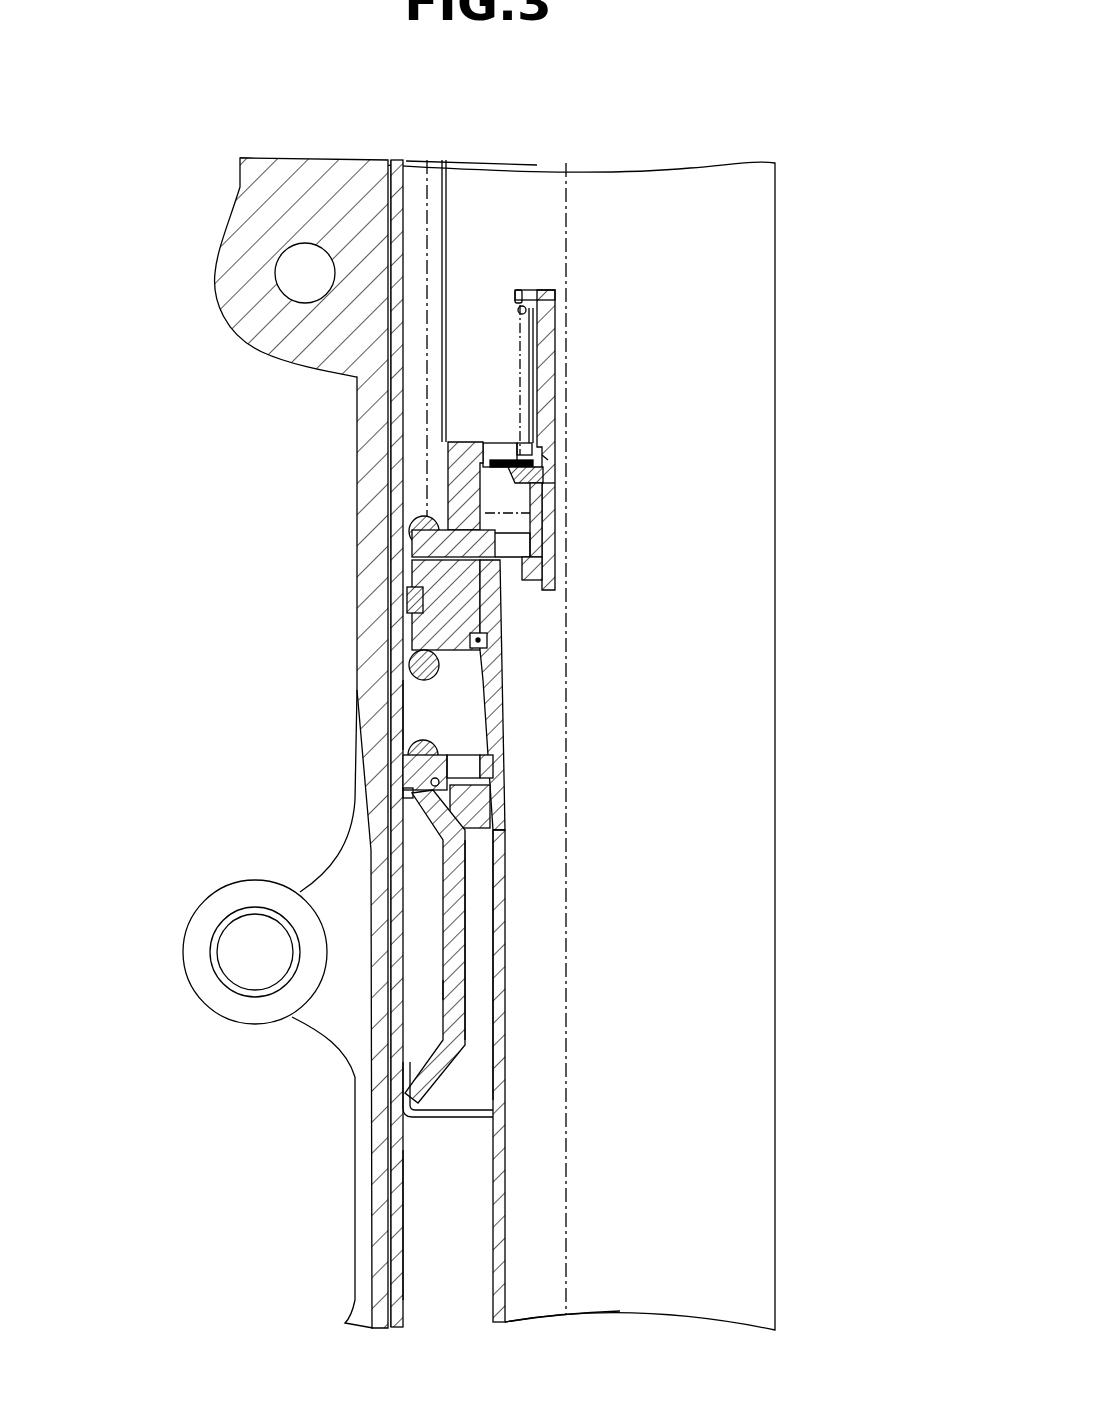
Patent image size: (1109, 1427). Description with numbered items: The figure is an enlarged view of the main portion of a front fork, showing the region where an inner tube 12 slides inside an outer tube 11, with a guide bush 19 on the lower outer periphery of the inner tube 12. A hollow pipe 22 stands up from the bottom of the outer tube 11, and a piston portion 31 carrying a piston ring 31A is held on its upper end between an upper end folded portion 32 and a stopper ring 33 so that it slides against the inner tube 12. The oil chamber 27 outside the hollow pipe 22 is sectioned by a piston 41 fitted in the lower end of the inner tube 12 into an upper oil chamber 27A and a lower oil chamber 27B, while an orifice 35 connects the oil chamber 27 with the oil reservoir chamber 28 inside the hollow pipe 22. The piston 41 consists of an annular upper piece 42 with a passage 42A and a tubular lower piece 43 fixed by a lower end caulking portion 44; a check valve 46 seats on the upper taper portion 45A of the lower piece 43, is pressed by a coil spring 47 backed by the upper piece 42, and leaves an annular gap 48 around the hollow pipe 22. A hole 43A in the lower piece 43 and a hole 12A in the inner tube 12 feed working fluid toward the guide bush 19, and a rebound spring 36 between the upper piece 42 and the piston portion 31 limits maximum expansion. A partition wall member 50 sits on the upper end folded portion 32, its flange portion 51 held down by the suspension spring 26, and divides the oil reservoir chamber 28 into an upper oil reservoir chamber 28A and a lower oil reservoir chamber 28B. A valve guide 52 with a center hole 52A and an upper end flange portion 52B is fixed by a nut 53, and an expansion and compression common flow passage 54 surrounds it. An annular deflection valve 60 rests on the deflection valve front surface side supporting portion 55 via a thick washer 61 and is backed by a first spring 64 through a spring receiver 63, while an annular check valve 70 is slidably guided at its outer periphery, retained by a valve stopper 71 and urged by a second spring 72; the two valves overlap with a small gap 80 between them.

The outer tube 11 is at (360, 397).
The inner tube 12 is at (396, 160).
The hole 12A is at (290, 862).
The guide bush 19 is at (355, 1055).
The hollow pipe 22 is at (493, 1303).
The suspension spring 26 is at (424, 518).
The oil chamber 27 is at (412, 1195).
The upper oil chamber 27A is at (460, 705).
The lower oil chamber 27B is at (418, 1247).
The oil reservoir chamber 28 is at (540, 1075).
The upper oil reservoir chamber 28A is at (513, 192).
The lower oil reservoir chamber 28B is at (525, 1140).
The piston portion 31 is at (440, 582).
The piston ring 31A is at (407, 600).
The upper end folded portion 32 is at (500, 607).
The stopper ring 33 is at (487, 648).
The orifice 35 is at (505, 933).
The rebound spring 36 is at (424, 660).
The piston 41 is at (440, 990).
The upper piece 42 is at (410, 765).
The passage 42A is at (470, 750).
The lower piece 43 is at (405, 1063).
The hole 43A is at (462, 900).
The lower end caulking portion 44 is at (410, 1115).
The upper taper portion 45A is at (430, 800).
The check valve 46 is at (485, 805).
The coil spring 47 is at (405, 790).
The annular gap 48 is at (497, 850).
The partition wall member 50 is at (462, 490).
The flange portion 51 is at (412, 544).
The valve guide 52 is at (528, 300).
The center hole 52A is at (557, 338).
The upper end flange portion 52B is at (512, 293).
The nut 53 is at (548, 590).
The expansion and compression common flow passage 54 is at (505, 541).
The deflection valve front surface side supporting portion 55 is at (555, 490).
The deflection valve 60 is at (510, 447).
The washer 61 is at (536, 463).
The spring receiver 63 is at (550, 459).
The first spring 64 is at (518, 310).
The check valve 70 is at (480, 442).
The valve stopper 71 is at (446, 441).
The second spring 72 is at (530, 513).
The small gap 80 is at (545, 482).